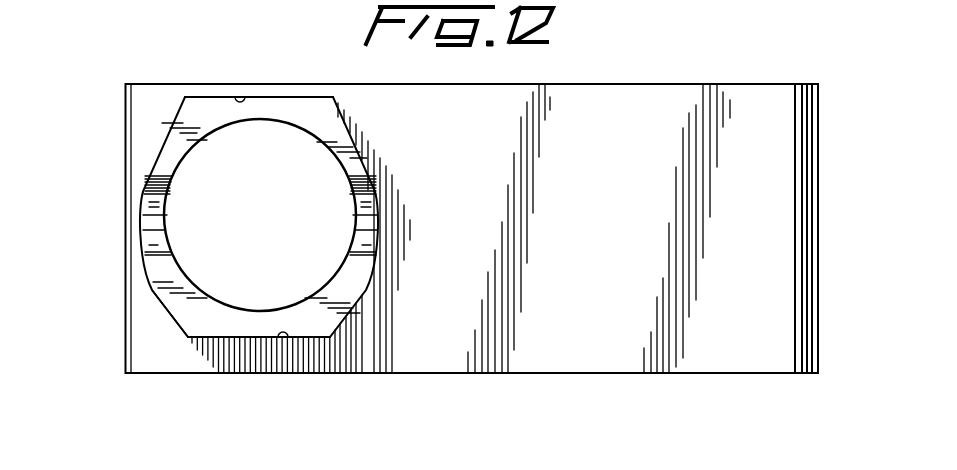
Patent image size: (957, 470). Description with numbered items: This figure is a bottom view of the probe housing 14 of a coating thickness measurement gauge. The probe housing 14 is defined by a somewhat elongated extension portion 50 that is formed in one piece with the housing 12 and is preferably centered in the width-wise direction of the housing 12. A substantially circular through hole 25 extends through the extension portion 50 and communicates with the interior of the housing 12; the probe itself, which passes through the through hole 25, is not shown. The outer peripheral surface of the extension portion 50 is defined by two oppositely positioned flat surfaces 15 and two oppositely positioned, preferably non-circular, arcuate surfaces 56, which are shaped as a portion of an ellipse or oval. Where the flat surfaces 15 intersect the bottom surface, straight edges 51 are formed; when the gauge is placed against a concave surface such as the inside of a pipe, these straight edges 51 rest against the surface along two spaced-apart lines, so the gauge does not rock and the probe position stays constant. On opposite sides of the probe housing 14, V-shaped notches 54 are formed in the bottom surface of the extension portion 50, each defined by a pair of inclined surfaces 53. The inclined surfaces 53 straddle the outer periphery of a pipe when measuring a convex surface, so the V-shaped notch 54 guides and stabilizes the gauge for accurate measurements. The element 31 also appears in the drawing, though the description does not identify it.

The housing 12 is at (637, 85).
The probe housing 14 is at (373, 143).
The flat surfaces 15 is at (268, 96).
The through hole 25 is at (270, 223).
The plate edge 31 is at (123, 324).
The extension portion 50 is at (205, 320).
The straight edges 51 is at (238, 95).
The inclined surfaces 53 is at (146, 193).
The V-shaped notch 54 is at (148, 216).
The arcuate surfaces 56 is at (142, 235).